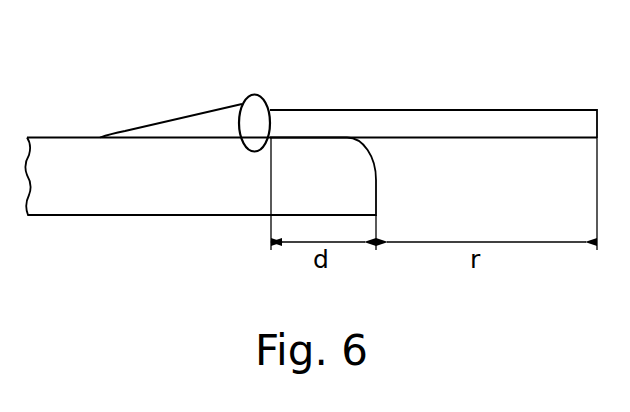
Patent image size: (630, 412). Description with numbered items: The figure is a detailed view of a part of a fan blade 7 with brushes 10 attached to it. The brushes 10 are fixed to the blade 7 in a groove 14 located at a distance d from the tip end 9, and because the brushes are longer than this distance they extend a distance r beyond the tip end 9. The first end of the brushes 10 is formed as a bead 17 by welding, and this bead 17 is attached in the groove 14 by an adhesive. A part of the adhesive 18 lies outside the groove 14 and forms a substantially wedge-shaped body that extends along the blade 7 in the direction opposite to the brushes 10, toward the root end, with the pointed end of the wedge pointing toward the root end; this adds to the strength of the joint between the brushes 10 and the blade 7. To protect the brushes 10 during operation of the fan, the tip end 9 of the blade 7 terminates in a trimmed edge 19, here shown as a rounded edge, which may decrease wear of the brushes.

The blade 7 is at (141, 185).
The tip end 9 is at (378, 183).
The brushes 10 is at (507, 110).
The groove 14 is at (251, 156).
The bead 17 is at (256, 95).
The adhesive 18 is at (215, 128).
The trimmed edge 19 is at (371, 137).